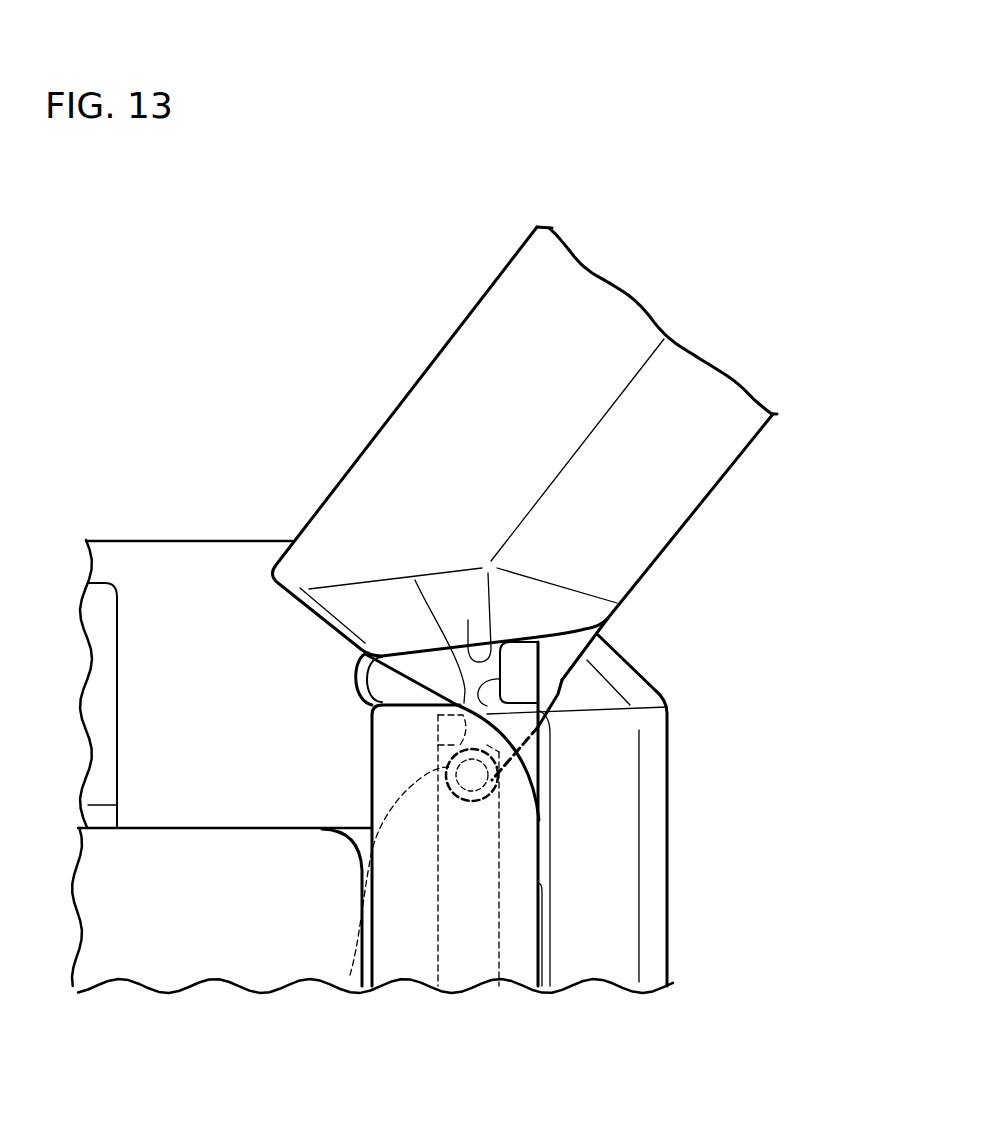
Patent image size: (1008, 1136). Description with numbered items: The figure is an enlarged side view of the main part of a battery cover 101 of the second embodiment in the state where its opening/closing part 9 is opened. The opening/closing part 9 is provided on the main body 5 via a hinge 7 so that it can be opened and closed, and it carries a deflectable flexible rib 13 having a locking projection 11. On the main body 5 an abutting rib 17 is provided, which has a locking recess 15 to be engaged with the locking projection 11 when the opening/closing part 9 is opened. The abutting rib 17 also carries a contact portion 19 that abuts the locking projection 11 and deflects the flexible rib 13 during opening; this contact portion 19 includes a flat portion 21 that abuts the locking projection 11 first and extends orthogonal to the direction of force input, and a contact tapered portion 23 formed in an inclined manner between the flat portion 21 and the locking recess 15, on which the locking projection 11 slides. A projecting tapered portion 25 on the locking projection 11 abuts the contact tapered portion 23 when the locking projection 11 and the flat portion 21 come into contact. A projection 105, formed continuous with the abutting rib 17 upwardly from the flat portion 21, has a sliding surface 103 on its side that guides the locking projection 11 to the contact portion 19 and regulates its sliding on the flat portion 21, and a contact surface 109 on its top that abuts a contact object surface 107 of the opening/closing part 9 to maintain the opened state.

The battery cover 101 is at (677, 262).
The opening/closing part 9 is at (472, 376).
The contact portion 19 is at (457, 703).
The contact object surface 107 is at (468, 622).
The flat portion 21 is at (418, 697).
The contact surface 109 is at (512, 642).
The projection 105 is at (545, 660).
The hinge 7 is at (355, 677).
The flexible rib 13 is at (566, 693).
The contact tapered portion 23 is at (437, 728).
The sliding surface 103 is at (667, 708).
The abutting rib 17 is at (544, 777).
The projecting tapered portion 25 is at (350, 975).
The locking projection 11 is at (465, 803).
The locking recess 15 is at (488, 805).
The main body 5 is at (198, 898).